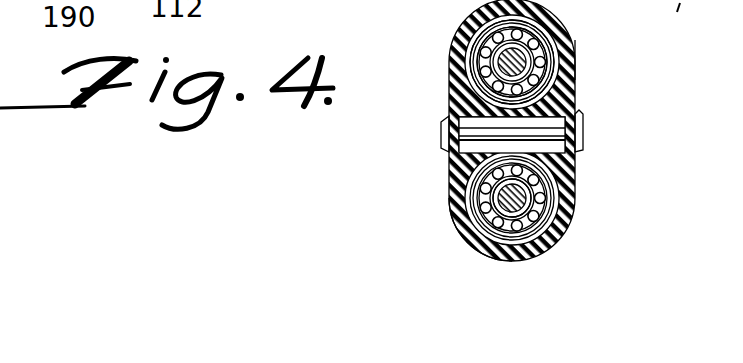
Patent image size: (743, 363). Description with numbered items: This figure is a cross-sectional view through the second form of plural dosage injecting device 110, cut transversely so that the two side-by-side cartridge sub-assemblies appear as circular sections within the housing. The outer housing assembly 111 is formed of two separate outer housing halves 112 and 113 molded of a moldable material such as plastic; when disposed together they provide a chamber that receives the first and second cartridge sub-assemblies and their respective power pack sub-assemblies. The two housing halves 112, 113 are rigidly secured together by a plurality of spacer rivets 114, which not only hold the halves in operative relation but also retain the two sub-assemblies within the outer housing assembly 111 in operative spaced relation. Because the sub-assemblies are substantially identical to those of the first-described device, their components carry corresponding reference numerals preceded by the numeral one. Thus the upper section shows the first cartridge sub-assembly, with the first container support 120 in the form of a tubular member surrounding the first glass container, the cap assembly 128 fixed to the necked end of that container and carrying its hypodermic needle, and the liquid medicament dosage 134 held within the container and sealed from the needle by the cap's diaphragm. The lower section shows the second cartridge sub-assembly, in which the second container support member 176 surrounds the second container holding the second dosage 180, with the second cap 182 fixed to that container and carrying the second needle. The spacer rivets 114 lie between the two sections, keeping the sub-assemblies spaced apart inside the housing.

The plural dosage injecting device 110 is at (610, 95).
The outer housing assembly 111 is at (447, 172).
The outer housing half 112 is at (450, 51).
The outer housing half 113 is at (576, 58).
The spacer rivets 114 is at (583, 128).
The first container support 120 is at (444, 120).
The cap assembly 128 is at (490, 70).
The liquid medicament dosage 134 is at (560, 42).
The second container support member 176 is at (558, 179).
The second dosage 180 is at (462, 216).
The second cap 182 is at (530, 210).